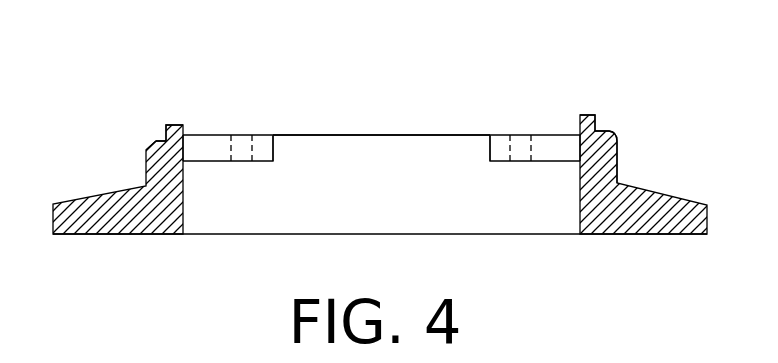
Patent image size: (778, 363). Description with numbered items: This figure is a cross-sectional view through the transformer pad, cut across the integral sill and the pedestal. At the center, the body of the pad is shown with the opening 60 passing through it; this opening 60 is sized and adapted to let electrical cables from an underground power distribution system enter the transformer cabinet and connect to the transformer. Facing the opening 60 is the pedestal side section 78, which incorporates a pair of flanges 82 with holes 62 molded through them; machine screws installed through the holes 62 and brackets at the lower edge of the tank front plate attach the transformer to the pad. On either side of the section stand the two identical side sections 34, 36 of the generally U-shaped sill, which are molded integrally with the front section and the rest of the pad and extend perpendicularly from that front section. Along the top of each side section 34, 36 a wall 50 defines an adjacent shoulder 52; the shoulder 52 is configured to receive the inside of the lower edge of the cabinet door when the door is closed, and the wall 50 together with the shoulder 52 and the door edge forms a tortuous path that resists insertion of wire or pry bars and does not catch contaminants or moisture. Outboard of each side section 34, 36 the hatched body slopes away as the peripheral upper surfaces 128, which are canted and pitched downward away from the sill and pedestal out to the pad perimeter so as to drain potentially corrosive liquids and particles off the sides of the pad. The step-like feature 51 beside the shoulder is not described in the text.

The peripheral upper surfaces 128 is at (90, 197).
The chamfered shoulder 51 is at (150, 142).
The shoulder 52 is at (163, 139).
The wall 50 is at (167, 125).
The holes 62 is at (242, 135).
The pedestal side section 78 is at (387, 145).
The flanges 82 is at (273, 151).
The side section 34 is at (183, 150).
The side section 36 is at (580, 153).
The opening 60 is at (557, 222).